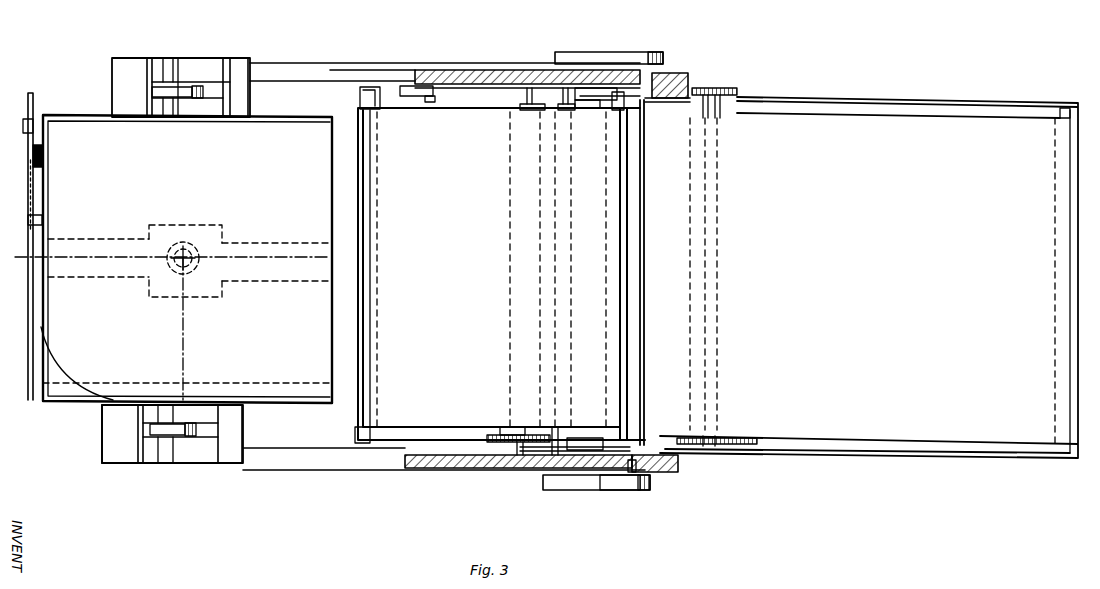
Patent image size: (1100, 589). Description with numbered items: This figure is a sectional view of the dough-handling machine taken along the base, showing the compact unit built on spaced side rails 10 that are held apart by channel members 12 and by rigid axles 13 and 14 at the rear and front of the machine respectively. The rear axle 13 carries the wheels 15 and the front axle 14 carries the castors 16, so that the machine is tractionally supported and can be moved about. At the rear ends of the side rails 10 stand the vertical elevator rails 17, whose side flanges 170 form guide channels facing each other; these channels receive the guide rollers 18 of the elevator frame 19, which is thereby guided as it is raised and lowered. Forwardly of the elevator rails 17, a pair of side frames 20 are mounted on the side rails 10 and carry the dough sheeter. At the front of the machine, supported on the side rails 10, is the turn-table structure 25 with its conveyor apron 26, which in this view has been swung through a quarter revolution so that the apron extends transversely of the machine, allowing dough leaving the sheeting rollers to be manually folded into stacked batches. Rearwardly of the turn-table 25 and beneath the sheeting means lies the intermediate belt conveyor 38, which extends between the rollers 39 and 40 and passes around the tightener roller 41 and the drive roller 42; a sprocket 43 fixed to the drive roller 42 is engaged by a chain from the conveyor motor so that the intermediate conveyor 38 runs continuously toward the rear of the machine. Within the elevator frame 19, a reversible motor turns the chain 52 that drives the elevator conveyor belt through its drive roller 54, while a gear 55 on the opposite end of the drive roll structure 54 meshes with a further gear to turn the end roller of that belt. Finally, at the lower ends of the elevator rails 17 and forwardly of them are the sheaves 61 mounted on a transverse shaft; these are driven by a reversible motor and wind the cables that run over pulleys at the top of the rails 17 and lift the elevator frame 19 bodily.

The side rails 10 is at (322, 65).
The channel members 12 is at (147, 75).
The rigid axle 13 is at (600, 490).
The rigid axle 14 is at (160, 450).
The wheels 15 is at (583, 52).
The castors 16 is at (195, 92).
The vertical elevator rails 17 is at (670, 80).
The side flanges 170 is at (650, 475).
The guide rollers 18 is at (680, 100).
The elevator frame 19 is at (800, 98).
The side frames 20 is at (470, 70).
The turn-table structure 25 is at (28, 212).
The conveyor apron 26 is at (62, 405).
The intermediate belt conveyor 38 is at (397, 120).
The roller 39 is at (370, 90).
The roller 40 is at (640, 115).
The tightener roller 41 is at (580, 110).
The drive roller 42 is at (520, 100).
The sprocket 43 is at (490, 435).
The chain 52 is at (725, 444).
The drive roller 54 is at (705, 166).
The gear 55 is at (725, 90).
The sheaves 61 is at (600, 112).